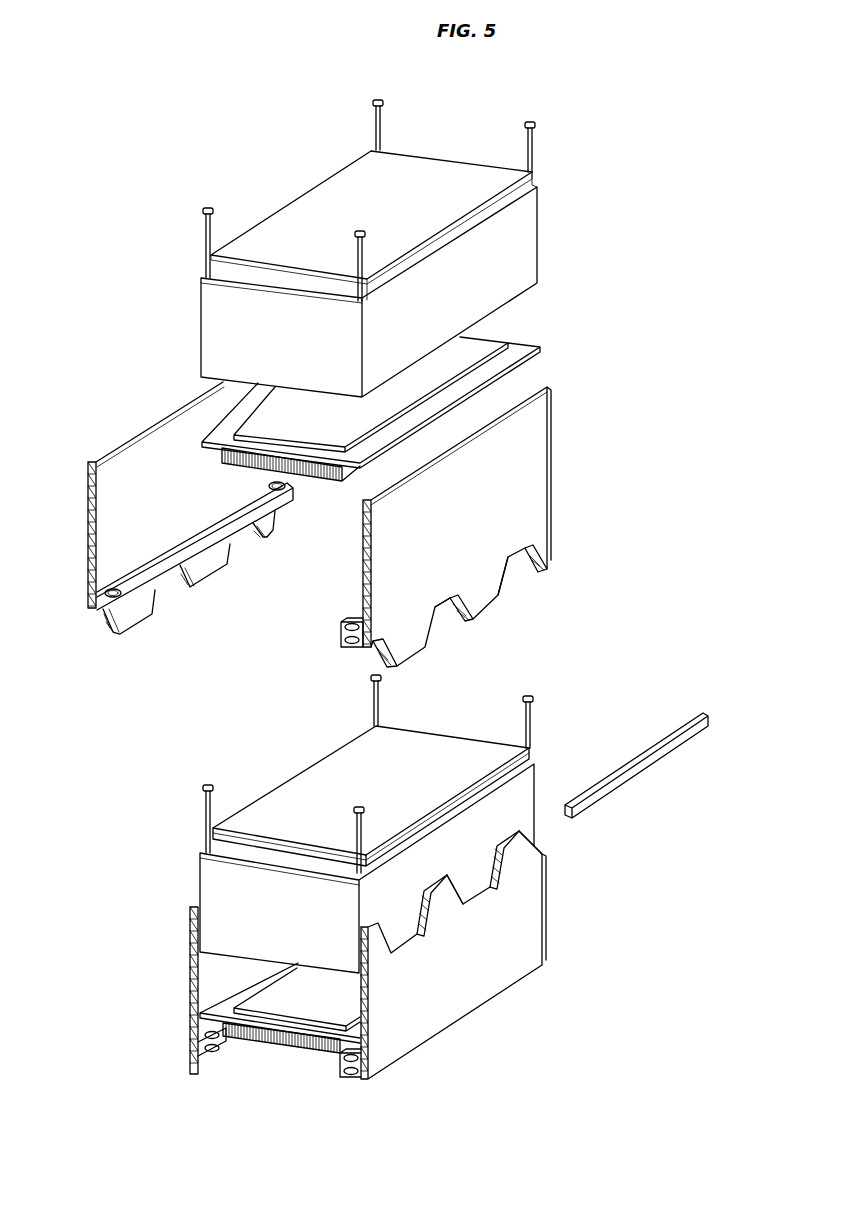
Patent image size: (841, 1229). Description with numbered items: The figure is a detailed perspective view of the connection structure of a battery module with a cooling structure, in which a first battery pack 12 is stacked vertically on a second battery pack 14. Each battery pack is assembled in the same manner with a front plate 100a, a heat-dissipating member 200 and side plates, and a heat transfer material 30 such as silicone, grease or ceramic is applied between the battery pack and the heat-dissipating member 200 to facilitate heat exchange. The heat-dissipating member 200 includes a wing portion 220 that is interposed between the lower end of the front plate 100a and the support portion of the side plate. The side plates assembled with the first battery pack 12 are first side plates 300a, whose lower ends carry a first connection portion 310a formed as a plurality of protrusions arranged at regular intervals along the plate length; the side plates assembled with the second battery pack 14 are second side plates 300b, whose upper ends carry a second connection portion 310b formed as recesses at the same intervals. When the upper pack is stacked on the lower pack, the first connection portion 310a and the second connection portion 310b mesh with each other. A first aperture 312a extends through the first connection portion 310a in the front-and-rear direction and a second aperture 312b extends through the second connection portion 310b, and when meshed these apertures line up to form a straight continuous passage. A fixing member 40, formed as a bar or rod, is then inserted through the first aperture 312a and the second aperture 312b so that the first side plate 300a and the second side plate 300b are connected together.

The first battery pack 12 is at (430, 176).
The second battery pack 14 is at (450, 751).
The heat transfer material 30 is at (280, 421).
The fixing member 40 is at (653, 745).
The front plate 100a is at (222, 333).
The heat-dissipating member 200 is at (326, 481).
The wing portion 220 is at (520, 349).
The first side plate 300a is at (547, 459).
The second side plate 300b is at (546, 973).
The first connection portion 310a is at (487, 600).
The second connection portion 310b is at (516, 864).
The first aperture 312a is at (103, 627).
The second aperture 312b is at (365, 953).